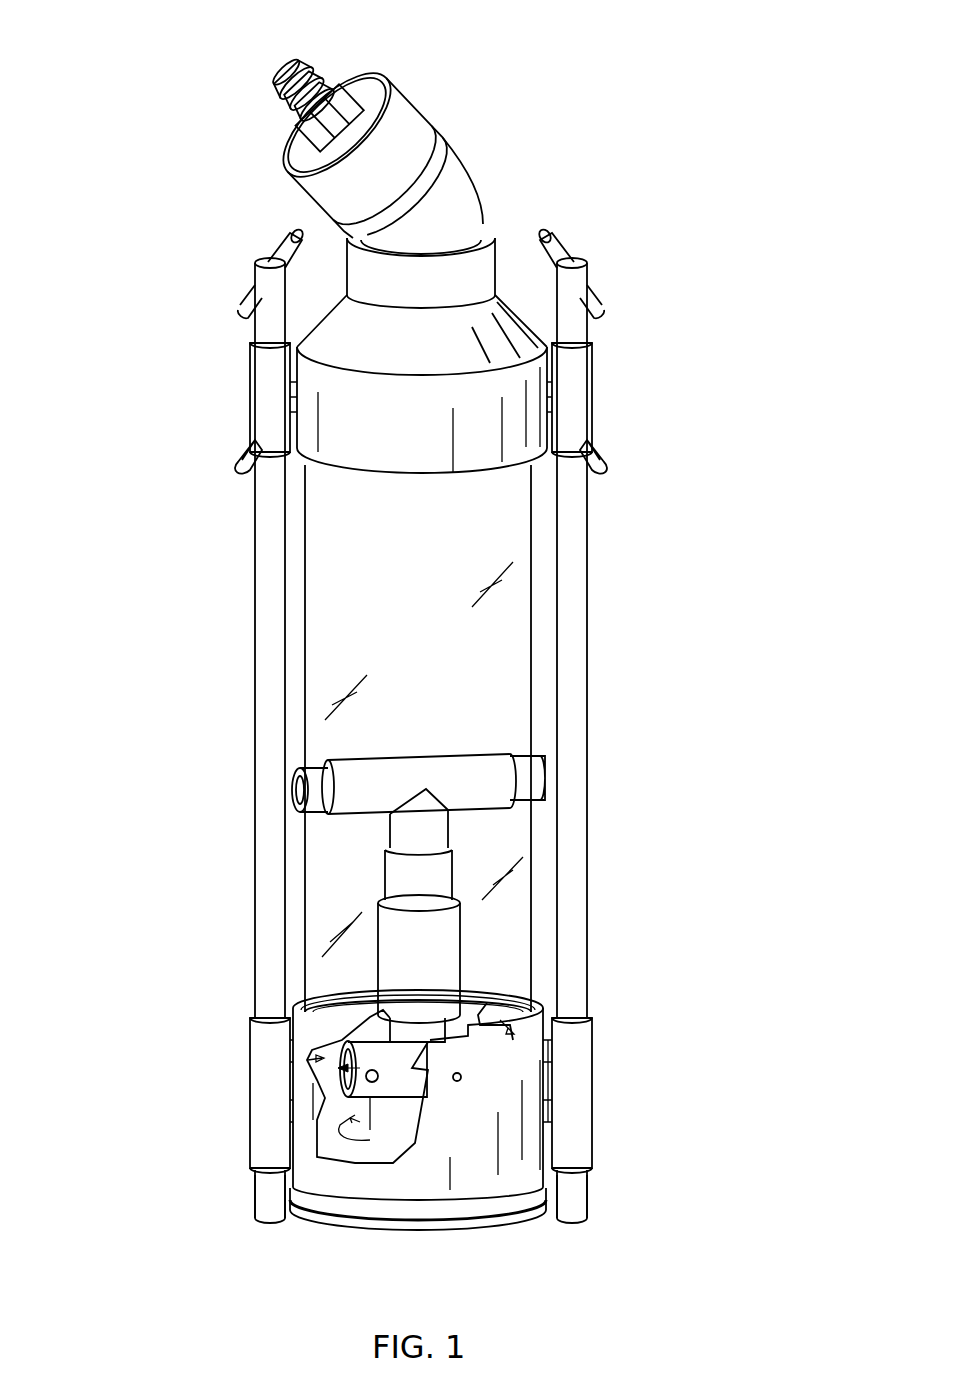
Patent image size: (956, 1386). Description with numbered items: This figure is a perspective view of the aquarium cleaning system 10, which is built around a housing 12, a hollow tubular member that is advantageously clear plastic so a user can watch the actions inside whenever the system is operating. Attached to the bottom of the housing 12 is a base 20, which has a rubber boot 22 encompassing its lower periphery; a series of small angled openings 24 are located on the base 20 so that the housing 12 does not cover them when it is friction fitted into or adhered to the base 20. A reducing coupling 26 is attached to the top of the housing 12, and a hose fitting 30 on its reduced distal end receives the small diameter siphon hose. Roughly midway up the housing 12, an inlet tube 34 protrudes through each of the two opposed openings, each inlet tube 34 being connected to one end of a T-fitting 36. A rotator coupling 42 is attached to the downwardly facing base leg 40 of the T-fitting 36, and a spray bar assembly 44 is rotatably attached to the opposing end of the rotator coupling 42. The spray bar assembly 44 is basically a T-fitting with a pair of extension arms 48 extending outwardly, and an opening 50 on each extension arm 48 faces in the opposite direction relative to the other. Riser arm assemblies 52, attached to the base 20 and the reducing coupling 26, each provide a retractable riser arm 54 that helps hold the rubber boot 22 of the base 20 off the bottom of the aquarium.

The aquarium cleaning system 10 is at (153, 798).
The housing 12 is at (332, 517).
The base 20 is at (513, 1193).
The rubber boot 22 is at (492, 1218).
The angled openings 24 is at (462, 1077).
The reducing coupling 26 is at (366, 411).
The hose fitting 30 is at (412, 122).
The inlet tube 34 is at (322, 790).
The T-fitting 36 is at (478, 755).
The base leg 40 is at (412, 832).
The rotator coupling 42 is at (445, 955).
The spray bar assembly 44 is at (358, 1063).
The extension arms 48 is at (372, 1082).
The opening 50 is at (377, 1083).
The riser arm assemblies 52 is at (255, 641).
The retractable riser arm 54 is at (252, 1190).